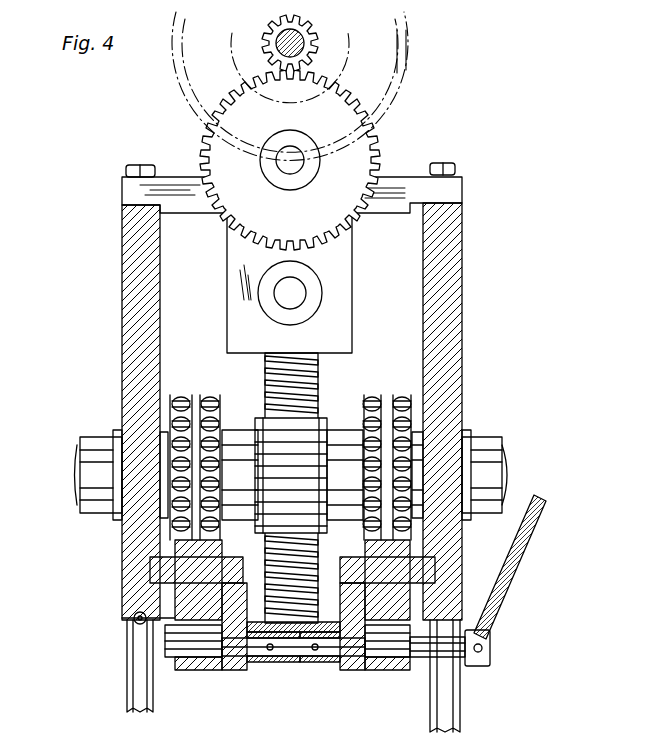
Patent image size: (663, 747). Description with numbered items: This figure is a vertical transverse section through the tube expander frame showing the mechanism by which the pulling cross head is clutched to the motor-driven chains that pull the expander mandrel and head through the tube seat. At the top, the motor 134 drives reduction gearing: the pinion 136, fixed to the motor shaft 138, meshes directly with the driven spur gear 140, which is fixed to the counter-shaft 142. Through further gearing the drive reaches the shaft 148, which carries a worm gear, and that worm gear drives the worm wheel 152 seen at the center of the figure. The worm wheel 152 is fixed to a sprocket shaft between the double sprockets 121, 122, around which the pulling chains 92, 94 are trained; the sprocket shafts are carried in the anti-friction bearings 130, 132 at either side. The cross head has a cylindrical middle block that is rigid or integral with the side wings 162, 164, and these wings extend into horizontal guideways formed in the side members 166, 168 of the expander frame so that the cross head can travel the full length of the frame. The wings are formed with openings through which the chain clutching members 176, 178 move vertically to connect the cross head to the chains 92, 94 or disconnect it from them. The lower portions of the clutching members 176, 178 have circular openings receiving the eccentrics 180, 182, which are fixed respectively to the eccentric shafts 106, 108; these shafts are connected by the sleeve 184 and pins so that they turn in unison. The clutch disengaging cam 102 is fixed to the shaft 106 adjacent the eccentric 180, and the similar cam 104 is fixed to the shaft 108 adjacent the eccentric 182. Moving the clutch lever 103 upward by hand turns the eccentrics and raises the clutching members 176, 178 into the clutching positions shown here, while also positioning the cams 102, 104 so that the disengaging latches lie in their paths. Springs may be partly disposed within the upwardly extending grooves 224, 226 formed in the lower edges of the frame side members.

The pulling chain 92 is at (192, 400).
The pulling chain 94 is at (380, 400).
The clutch disengaging cam 102 is at (170, 660).
The clutch lever 103 is at (537, 545).
The clutch disengaging cam 104 is at (420, 660).
The eccentric shaft 106 is at (258, 664).
The eccentric shaft 108 is at (326, 664).
The double sprocket 121 is at (212, 400).
The double sprocket 122 is at (420, 444).
The anti-friction bearing 130 is at (90, 440).
The anti-friction bearing 132 is at (497, 433).
The motor 134 is at (405, 64).
The pinion 136 is at (312, 45).
The motor shaft 138 is at (276, 50).
The driven spur gear 140 is at (380, 147).
The counter-shaft 142 is at (288, 167).
The shaft 148 is at (303, 292).
The worm wheel 152 is at (322, 352).
The wing 162 is at (148, 568).
The wing 164 is at (433, 576).
The side member 166 is at (122, 293).
The side member 168 is at (458, 298).
The chain clutching member 176 is at (165, 590).
The chain clutching member 178 is at (392, 592).
The eccentric 180 is at (202, 648).
The eccentric 182 is at (386, 660).
The sleeve 184 is at (297, 658).
The groove 224 is at (150, 620).
The groove 226 is at (480, 622).